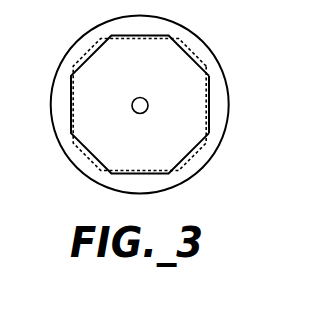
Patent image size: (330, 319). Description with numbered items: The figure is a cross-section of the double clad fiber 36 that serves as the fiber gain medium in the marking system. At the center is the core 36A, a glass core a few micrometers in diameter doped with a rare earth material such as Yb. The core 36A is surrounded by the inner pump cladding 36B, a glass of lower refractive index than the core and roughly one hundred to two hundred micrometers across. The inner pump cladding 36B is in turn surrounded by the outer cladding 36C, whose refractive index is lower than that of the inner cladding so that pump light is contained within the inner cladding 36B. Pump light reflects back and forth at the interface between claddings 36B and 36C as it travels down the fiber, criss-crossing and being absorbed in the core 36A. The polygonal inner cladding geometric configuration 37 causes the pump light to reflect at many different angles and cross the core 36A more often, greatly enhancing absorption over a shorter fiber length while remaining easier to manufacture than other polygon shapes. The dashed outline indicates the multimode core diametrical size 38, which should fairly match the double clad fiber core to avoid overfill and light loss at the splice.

The double clad fiber 36 is at (187, 29).
The core 36A is at (139, 114).
The inner pump cladding 36B is at (100, 68).
The outer cladding 36C is at (220, 104).
The inner cladding geometric configuration 37 is at (208, 120).
The multimode core diametrical size 38 is at (137, 37).